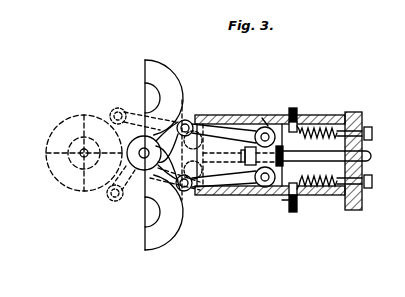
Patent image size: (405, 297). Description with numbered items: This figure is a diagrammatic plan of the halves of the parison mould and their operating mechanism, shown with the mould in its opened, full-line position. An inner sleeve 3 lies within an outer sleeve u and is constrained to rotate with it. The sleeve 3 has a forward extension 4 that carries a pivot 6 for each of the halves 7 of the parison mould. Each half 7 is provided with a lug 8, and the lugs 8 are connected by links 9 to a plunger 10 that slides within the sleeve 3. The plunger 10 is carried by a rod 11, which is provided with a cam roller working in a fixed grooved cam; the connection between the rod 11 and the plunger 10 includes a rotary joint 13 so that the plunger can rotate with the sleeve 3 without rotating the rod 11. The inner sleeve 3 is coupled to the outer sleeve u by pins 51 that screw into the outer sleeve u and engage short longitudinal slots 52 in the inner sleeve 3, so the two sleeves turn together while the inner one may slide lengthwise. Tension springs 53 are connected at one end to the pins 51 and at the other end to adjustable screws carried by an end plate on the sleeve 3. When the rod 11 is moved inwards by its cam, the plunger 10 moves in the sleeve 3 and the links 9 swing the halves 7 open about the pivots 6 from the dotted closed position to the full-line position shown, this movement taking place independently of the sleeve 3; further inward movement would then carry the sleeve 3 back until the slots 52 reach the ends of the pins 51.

The inner sleeve 3 is at (236, 118).
The forward extension 4 is at (218, 126).
The pivot 6 is at (141, 160).
The parison mould half 7 is at (145, 60).
The lug 8 is at (116, 109).
The link 9 is at (258, 124).
The plunger 10 is at (266, 116).
The rod 11 is at (372, 157).
The rotary joint 13 is at (282, 210).
The pin 51 is at (297, 110).
The slot 52 is at (301, 128).
The tension spring 53 is at (356, 118).
The outer sleeve u is at (293, 108).